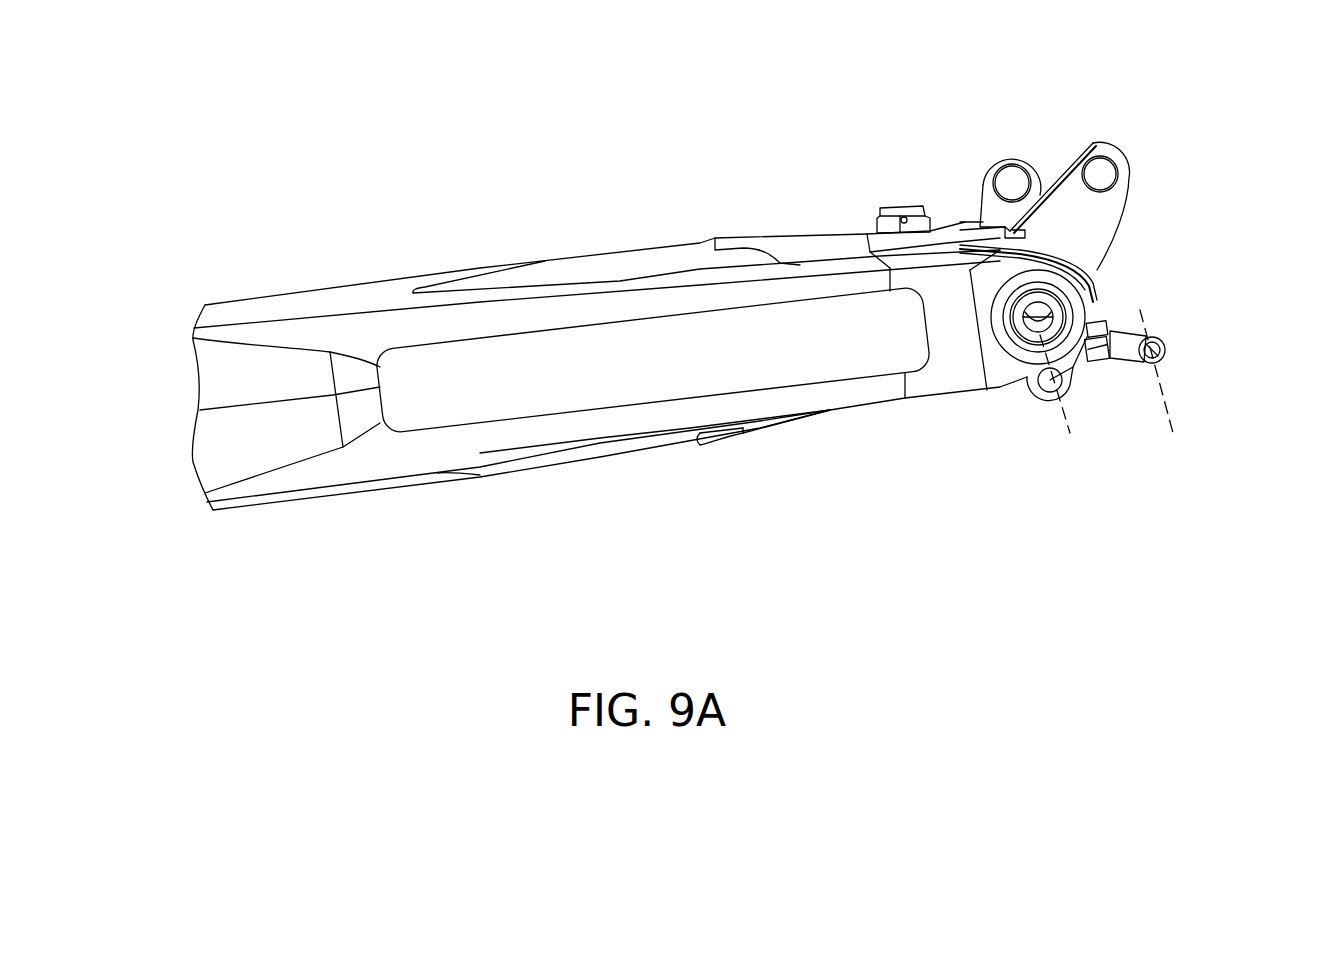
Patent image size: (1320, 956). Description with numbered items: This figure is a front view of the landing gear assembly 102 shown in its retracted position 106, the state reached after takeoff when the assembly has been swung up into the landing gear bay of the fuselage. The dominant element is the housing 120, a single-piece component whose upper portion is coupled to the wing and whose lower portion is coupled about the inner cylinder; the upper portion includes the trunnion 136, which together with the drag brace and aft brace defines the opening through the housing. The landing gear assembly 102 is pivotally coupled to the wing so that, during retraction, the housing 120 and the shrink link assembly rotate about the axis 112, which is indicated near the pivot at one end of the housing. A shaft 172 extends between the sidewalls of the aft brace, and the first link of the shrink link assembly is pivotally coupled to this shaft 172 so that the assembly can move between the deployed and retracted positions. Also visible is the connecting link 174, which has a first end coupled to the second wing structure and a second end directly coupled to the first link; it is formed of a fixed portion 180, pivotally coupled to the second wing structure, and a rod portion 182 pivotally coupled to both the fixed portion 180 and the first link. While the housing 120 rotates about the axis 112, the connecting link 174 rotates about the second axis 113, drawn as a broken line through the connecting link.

The landing gear assembly 102 is at (186, 125).
The retracted position 106 is at (1022, 110).
The axis 112 is at (1065, 407).
The second axis 113 is at (1168, 404).
The housing 120 is at (553, 267).
The trunnion 136 is at (1093, 278).
The shaft 172 is at (875, 217).
The connecting link 174 is at (1172, 310).
The fixed portion 180 is at (1162, 337).
The rod portion 182 is at (1103, 323).